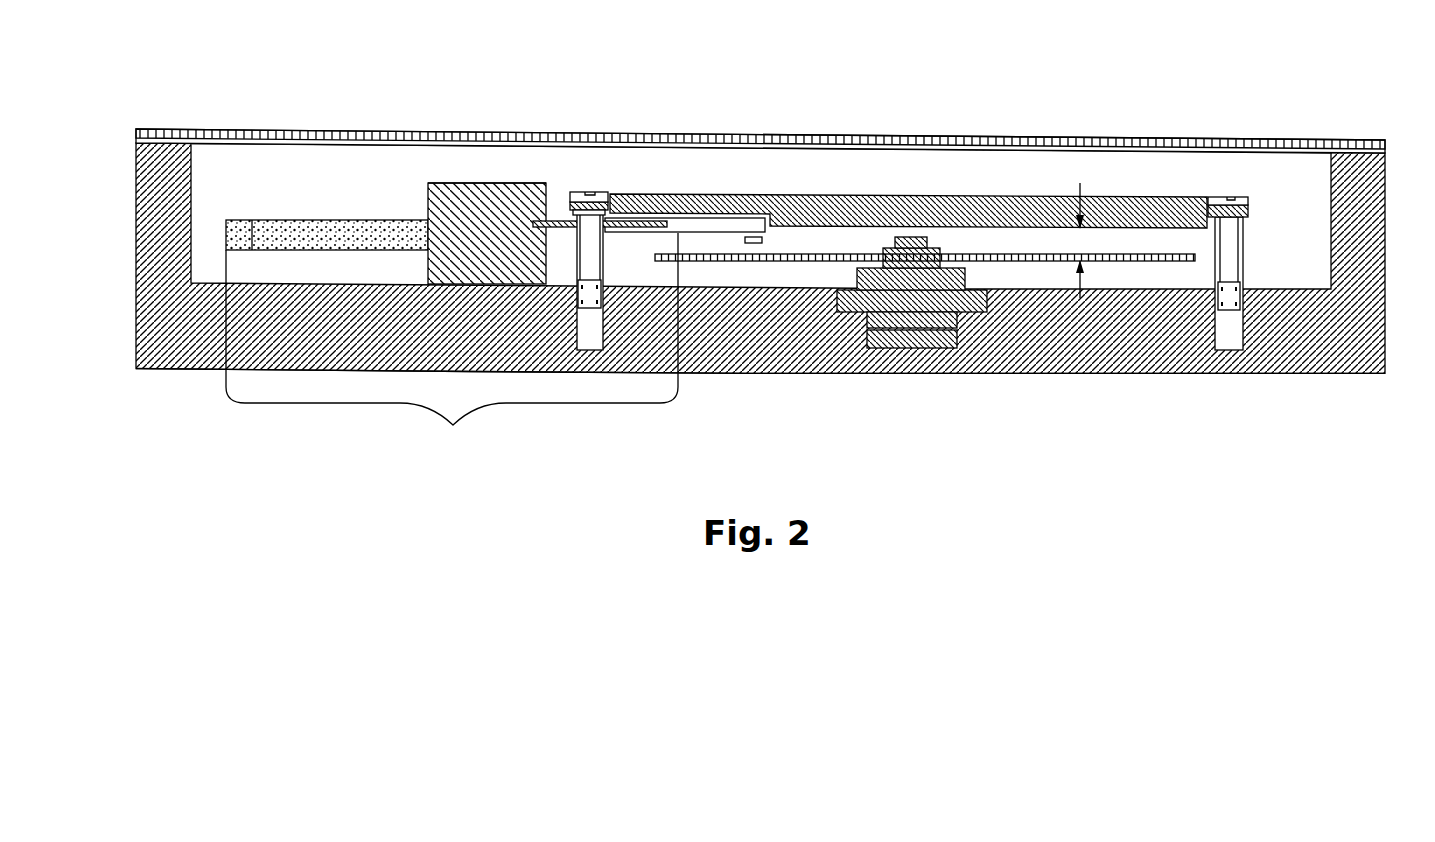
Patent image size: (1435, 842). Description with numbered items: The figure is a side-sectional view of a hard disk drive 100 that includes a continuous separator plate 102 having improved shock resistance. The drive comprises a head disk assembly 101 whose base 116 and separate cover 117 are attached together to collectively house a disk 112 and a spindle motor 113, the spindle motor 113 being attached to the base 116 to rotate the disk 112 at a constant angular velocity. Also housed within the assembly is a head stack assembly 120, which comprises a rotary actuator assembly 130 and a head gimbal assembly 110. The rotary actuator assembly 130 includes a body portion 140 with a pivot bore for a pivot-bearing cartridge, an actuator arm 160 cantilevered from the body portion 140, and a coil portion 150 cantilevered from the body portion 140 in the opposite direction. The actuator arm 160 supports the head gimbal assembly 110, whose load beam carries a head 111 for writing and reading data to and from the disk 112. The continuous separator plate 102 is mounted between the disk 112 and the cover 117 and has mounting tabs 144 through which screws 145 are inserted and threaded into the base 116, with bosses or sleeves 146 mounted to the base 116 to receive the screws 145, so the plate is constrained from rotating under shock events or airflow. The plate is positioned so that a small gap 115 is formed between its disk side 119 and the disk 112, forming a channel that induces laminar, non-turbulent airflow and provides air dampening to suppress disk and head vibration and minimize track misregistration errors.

The hard disk drive 100 is at (345, 55).
The head disk assembly 101 is at (137, 206).
The continuous separator plate 102 is at (945, 201).
The head gimbal assembly 110 is at (712, 222).
The head 111 is at (763, 240).
The disk 112 is at (740, 261).
The spindle motor 113 is at (916, 284).
The small gap 115 is at (1082, 185).
The base 116 is at (1110, 373).
The cover 117 is at (938, 137).
The disk side 119 is at (1152, 229).
The head stack assembly 120 is at (428, 211).
The rotary actuator assembly 130 is at (452, 345).
The body portion 140 is at (485, 183).
The mounting tabs 144 is at (572, 192).
The screws 145 is at (602, 192).
The bosses or sleeves 146 is at (603, 255).
The coil portion 150 is at (320, 220).
The actuator arm 160 is at (557, 221).